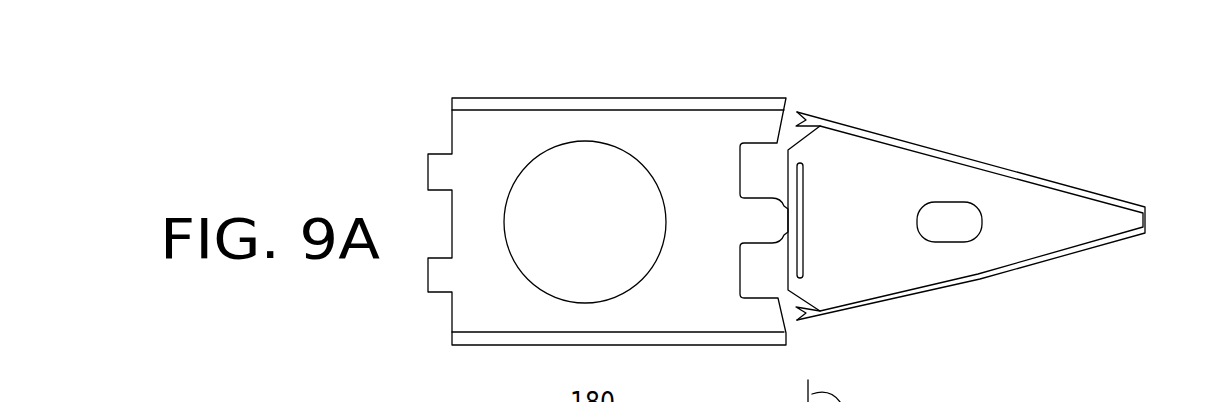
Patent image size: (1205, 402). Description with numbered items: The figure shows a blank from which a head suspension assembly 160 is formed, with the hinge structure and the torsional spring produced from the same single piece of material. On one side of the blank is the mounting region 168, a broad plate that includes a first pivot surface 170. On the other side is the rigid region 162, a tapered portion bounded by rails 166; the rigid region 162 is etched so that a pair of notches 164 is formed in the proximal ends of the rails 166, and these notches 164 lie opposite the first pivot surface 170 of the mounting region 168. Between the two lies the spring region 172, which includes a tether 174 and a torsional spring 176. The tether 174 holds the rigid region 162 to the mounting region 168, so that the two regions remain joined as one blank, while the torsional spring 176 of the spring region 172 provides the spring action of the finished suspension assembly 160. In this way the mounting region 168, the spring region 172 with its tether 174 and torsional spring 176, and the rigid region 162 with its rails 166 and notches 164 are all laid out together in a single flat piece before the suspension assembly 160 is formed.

The suspension assembly 160 is at (1092, 286).
The rigid region 162 is at (1090, 222).
The notches 164 is at (795, 121).
The rails 166 is at (1008, 170).
The mounting region 168 is at (520, 130).
The first pivot surface 170 is at (782, 130).
The spring region 172 is at (803, 218).
The tether 174 is at (762, 220).
The torsional spring 176 is at (798, 246).